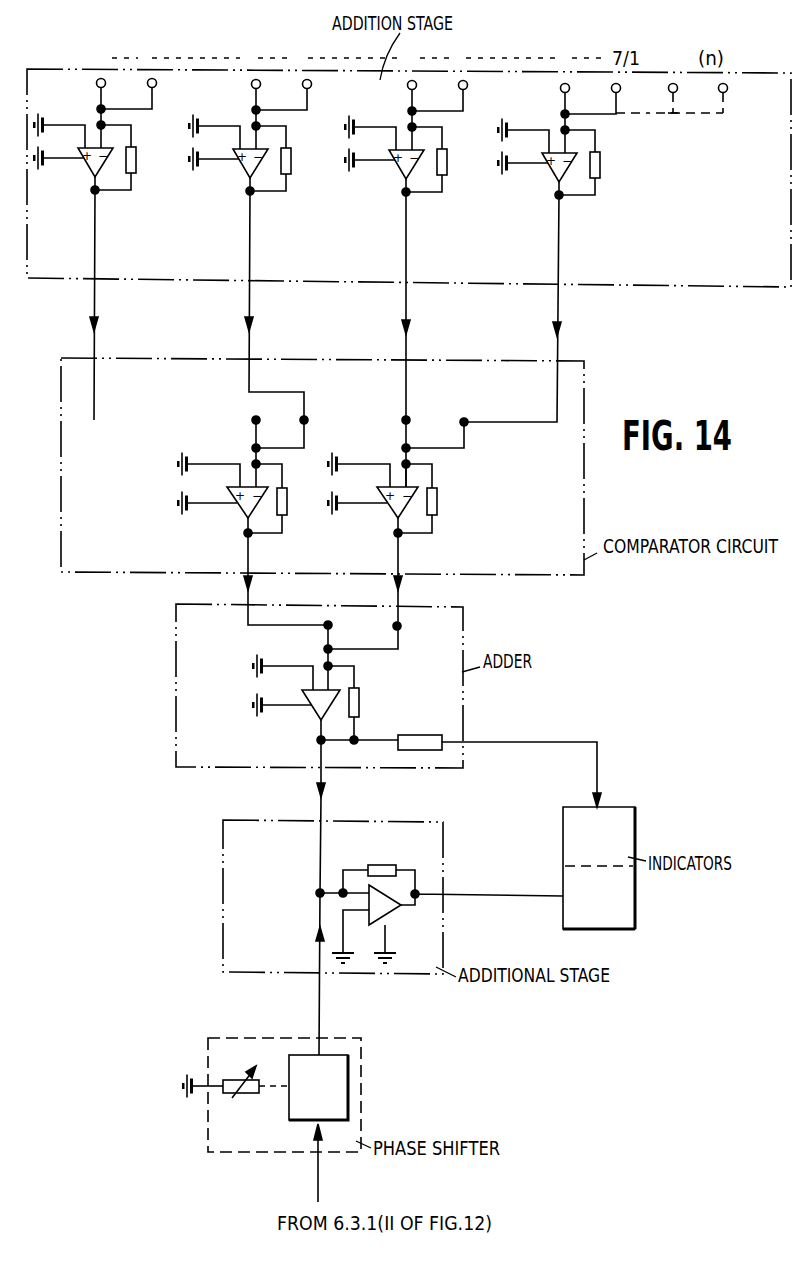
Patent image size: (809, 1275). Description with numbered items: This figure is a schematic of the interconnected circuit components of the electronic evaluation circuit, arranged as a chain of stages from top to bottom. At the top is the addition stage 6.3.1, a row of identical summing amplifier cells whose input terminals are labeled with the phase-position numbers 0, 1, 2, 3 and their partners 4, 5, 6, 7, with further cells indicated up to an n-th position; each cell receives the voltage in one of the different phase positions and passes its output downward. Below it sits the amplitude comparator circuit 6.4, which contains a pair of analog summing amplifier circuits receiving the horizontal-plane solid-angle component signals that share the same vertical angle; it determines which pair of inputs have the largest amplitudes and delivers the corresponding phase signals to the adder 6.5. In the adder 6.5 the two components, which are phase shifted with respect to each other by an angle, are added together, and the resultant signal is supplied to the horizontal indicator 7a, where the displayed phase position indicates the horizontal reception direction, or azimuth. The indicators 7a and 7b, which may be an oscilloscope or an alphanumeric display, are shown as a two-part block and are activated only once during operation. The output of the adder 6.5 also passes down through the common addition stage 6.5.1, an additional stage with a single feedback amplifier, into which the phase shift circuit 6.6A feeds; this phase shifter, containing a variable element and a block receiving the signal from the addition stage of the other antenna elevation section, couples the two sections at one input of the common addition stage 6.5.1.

The addition stage 6.3.1 is at (696, 271).
The amplitude comparator circuit 6.4 is at (503, 541).
The adder 6.5 is at (214, 727).
The common addition stage 6.5.1 is at (273, 928).
The phase shift circuit 6.6A is at (299, 1120).
The horizontal indicator 7a is at (599, 836).
The indicator 7b is at (599, 897).
The input terminal 0 is at (105, 67).
The input terminal 1 is at (253, 68).
The input terminal 2 is at (412, 68).
The input terminal 3 is at (565, 70).
The input terminal 4 is at (148, 67).
The input terminal 5 is at (304, 68).
The input terminal 6 is at (460, 68).
The input terminal 7 is at (618, 70).